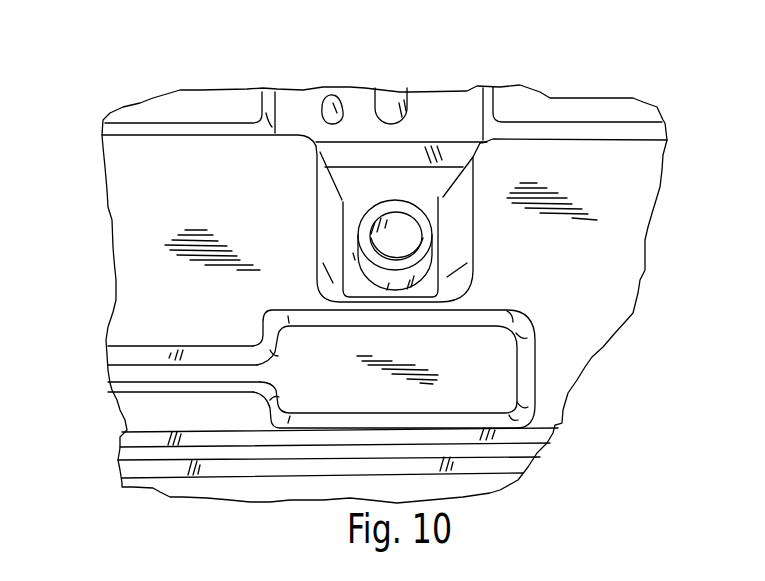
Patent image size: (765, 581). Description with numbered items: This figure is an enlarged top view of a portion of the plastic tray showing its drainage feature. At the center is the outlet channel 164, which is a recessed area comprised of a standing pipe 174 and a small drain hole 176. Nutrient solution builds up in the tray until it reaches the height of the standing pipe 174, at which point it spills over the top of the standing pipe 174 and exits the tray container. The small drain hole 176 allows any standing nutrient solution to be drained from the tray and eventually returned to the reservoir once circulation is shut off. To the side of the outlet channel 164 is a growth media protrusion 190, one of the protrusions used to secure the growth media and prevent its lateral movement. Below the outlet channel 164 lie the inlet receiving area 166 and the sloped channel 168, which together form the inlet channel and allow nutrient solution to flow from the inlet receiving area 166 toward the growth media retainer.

The growth media protrusions 190 is at (321, 101).
The outlet channel 164 is at (399, 183).
The small drain hole 176 is at (352, 257).
The standing pipe 174 is at (428, 236).
The inlet receiving area 166 is at (501, 375).
The sloped channel 168 is at (122, 373).